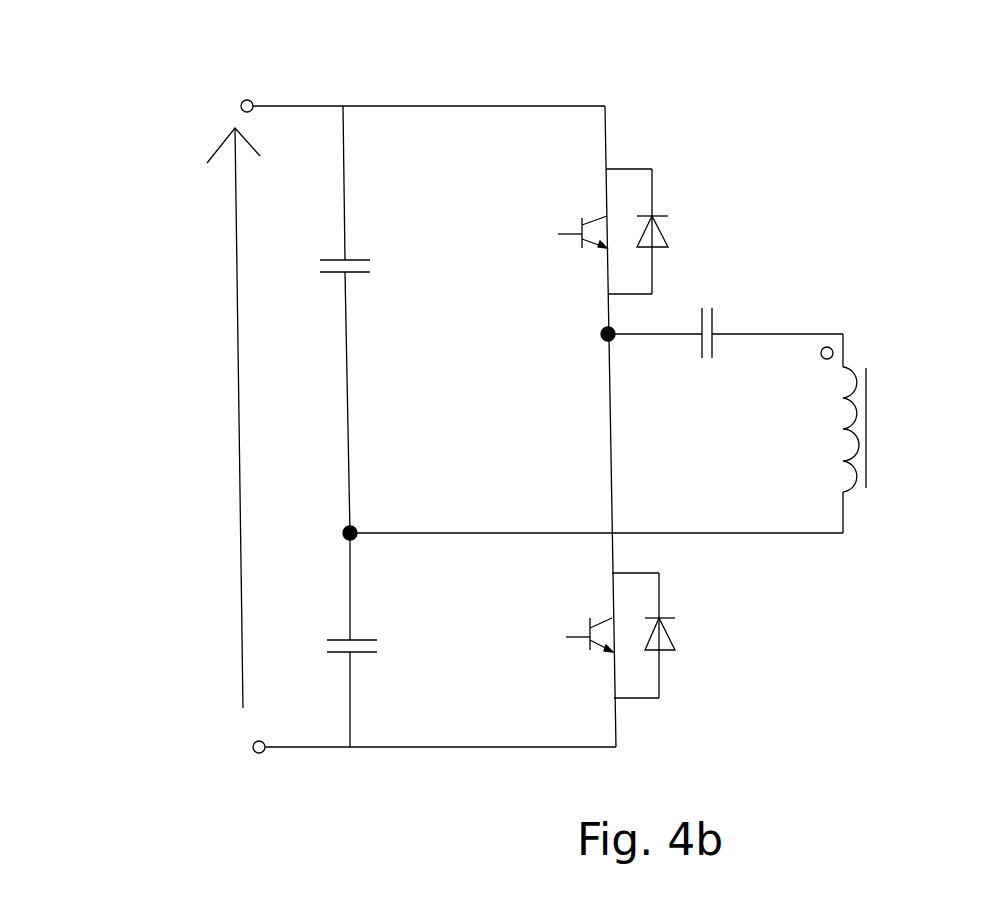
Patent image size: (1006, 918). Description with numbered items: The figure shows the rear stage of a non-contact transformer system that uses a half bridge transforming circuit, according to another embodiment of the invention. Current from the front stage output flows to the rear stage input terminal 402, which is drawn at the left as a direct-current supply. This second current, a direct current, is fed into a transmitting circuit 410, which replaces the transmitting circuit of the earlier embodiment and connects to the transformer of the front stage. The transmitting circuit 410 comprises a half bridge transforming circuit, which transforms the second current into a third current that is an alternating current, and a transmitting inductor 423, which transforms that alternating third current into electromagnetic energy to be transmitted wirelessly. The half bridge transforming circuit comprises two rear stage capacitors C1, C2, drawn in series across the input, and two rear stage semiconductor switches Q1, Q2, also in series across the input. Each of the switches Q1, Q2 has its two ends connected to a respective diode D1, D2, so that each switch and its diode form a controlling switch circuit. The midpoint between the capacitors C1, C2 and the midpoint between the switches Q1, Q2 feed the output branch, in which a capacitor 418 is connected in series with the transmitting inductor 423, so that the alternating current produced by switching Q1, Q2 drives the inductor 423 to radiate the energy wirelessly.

The rear stage input terminal 402 is at (237, 340).
The transmitting circuit 410 is at (920, 118).
The DC blocking capacitor 418 is at (710, 308).
The transmitting inductor 423 is at (852, 357).
The rear stage capacitor C1 is at (325, 255).
The rear stage capacitor C2 is at (327, 637).
The rear stage semiconductor switch Q1 is at (580, 217).
The rear stage semiconductor switch Q2 is at (587, 618).
The diode D1 is at (668, 237).
The diode D2 is at (673, 640).